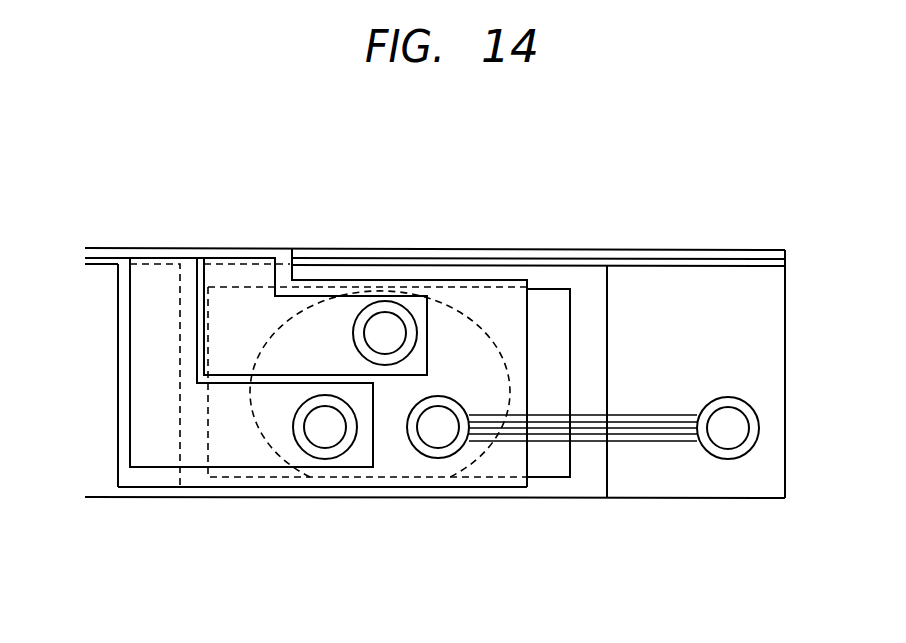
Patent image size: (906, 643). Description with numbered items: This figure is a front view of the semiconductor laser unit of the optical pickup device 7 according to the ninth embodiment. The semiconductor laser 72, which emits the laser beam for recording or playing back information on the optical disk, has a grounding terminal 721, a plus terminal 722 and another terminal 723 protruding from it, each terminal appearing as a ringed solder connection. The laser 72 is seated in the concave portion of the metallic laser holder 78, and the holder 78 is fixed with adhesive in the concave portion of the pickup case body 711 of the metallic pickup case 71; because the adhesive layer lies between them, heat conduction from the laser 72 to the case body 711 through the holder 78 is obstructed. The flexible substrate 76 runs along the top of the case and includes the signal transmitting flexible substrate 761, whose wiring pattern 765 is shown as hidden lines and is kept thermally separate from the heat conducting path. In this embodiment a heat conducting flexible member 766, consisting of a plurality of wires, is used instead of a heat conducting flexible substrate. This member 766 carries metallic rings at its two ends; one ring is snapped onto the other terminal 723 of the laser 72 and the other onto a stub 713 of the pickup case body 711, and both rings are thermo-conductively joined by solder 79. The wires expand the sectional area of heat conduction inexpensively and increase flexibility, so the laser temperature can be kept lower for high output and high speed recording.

The optical pickup device 7 is at (640, 234).
The pickup case 71 is at (100, 340).
The pickup case body 711 is at (668, 473).
The stub 713 is at (737, 421).
The semiconductor laser 72 is at (357, 470).
The grounding terminal 721 is at (375, 333).
The plus terminal 722 is at (317, 422).
The other terminal 723 is at (437, 437).
The flexible substrate 76 is at (722, 249).
The signal transmitting flexible substrate 761 is at (120, 498).
The wiring pattern 765 is at (165, 467).
The heat conducting flexible member 766 is at (588, 455).
The laser holder 78 is at (547, 293).
The solder 79 is at (390, 307).